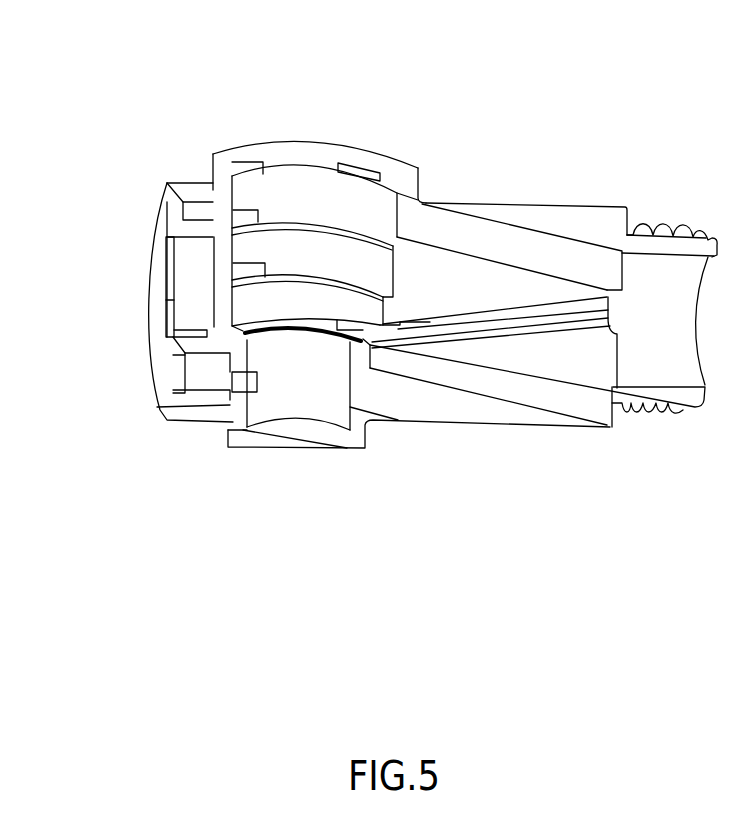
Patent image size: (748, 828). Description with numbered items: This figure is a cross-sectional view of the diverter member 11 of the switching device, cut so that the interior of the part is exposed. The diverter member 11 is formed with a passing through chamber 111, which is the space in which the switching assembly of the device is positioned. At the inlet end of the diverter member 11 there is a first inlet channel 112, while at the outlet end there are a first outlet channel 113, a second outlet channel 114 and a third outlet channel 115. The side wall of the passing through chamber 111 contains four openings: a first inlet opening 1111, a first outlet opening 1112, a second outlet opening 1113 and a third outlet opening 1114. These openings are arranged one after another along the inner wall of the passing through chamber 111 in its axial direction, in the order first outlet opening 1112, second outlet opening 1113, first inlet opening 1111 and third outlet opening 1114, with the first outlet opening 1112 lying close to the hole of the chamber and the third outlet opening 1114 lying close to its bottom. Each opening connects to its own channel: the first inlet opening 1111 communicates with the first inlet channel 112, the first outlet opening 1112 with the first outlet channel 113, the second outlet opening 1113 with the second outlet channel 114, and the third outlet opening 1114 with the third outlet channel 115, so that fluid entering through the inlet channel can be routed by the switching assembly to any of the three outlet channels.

The diverter member 11 is at (497, 200).
The passing through chamber 111 is at (303, 247).
The first inlet opening 1111 is at (360, 333).
The first outlet opening 1112 is at (250, 212).
The second outlet opening 1113 is at (245, 272).
The third outlet opening 1114 is at (240, 388).
The first inlet channel 112 is at (527, 328).
The first outlet channel 113 is at (178, 224).
The second outlet channel 114 is at (167, 315).
The third outlet channel 115 is at (188, 380).